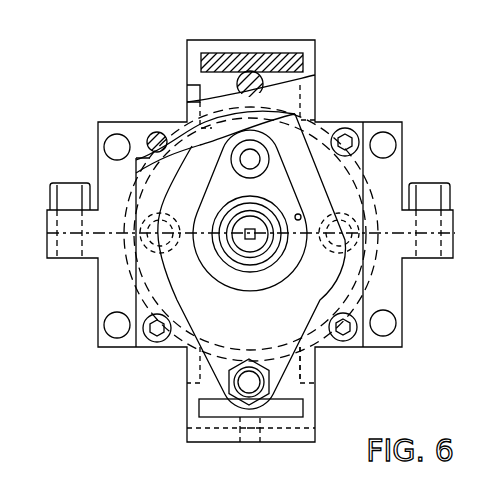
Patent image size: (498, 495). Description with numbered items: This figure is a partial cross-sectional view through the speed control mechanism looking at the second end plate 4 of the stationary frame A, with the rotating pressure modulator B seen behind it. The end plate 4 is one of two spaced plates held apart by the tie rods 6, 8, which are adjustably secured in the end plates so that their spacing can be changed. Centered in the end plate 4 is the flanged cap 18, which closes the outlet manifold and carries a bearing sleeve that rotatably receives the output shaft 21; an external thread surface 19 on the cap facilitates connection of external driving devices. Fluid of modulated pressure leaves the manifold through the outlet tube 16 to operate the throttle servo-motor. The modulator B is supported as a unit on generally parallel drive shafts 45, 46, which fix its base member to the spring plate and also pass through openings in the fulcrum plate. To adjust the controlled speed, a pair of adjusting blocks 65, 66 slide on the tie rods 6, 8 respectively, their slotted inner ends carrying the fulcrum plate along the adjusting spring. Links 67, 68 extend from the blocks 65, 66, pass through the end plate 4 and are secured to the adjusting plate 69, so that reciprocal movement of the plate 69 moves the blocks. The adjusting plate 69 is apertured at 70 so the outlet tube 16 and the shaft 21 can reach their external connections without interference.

The end plate 4 is at (383, 350).
The tie rod 6 is at (282, 53).
The tie rod 8 is at (297, 408).
The outlet tube 16 is at (270, 153).
The flanged cap 18 is at (335, 123).
The external thread surface 19 is at (277, 250).
The output shaft 21 is at (253, 247).
The drive shaft 45 is at (365, 289).
The drive shaft 46 is at (135, 256).
The adjusting block 65 is at (315, 60).
The adjusting block 66 is at (302, 378).
The link 67 is at (247, 72).
The link 68 is at (240, 385).
The adjusting plate 69 is at (163, 192).
The aperture 70 is at (303, 218).
The stationary frame A is at (200, 34).
The rotating pressure modulator B is at (128, 278).